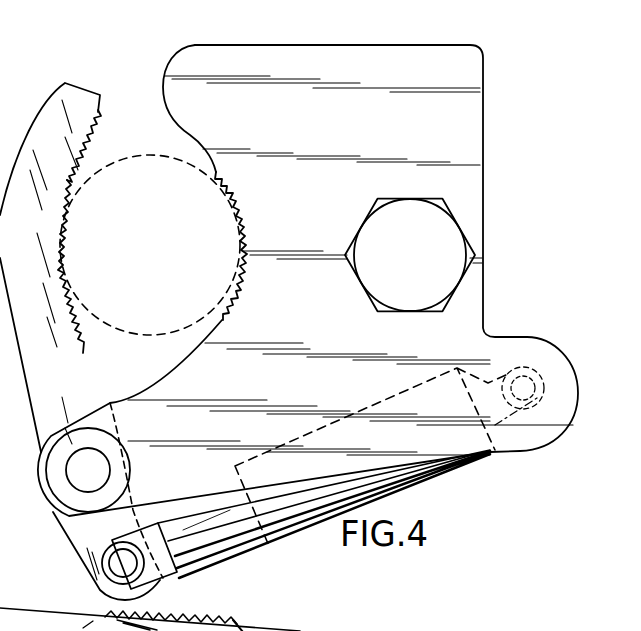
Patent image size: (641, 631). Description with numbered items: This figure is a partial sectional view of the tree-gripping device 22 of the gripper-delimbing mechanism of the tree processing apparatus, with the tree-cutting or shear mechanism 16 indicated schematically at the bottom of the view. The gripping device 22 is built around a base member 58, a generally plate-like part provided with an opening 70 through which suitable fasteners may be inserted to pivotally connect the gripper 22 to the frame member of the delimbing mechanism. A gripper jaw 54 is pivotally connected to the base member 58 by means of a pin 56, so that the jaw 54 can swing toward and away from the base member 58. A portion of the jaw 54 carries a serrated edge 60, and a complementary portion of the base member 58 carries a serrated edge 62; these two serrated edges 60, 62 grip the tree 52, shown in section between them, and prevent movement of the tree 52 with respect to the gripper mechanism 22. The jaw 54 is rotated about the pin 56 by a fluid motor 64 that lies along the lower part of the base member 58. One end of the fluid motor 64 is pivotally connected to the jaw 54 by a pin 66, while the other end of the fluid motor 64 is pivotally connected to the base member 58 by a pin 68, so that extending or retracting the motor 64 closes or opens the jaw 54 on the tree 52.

The tree-cutting or shear mechanism 16 is at (482, 630).
The tree-gripping device 22 is at (505, 82).
The tree 52 is at (146, 334).
The gripper jaw 54 is at (46, 388).
The pin 56 is at (101, 463).
The base member 58 is at (350, 78).
The serrated edge 60 is at (83, 162).
The serrated edge 62 is at (232, 296).
The fluid motor 64 is at (359, 413).
The pin 66 is at (124, 565).
The pin 68 is at (527, 388).
The opening 70 is at (396, 272).